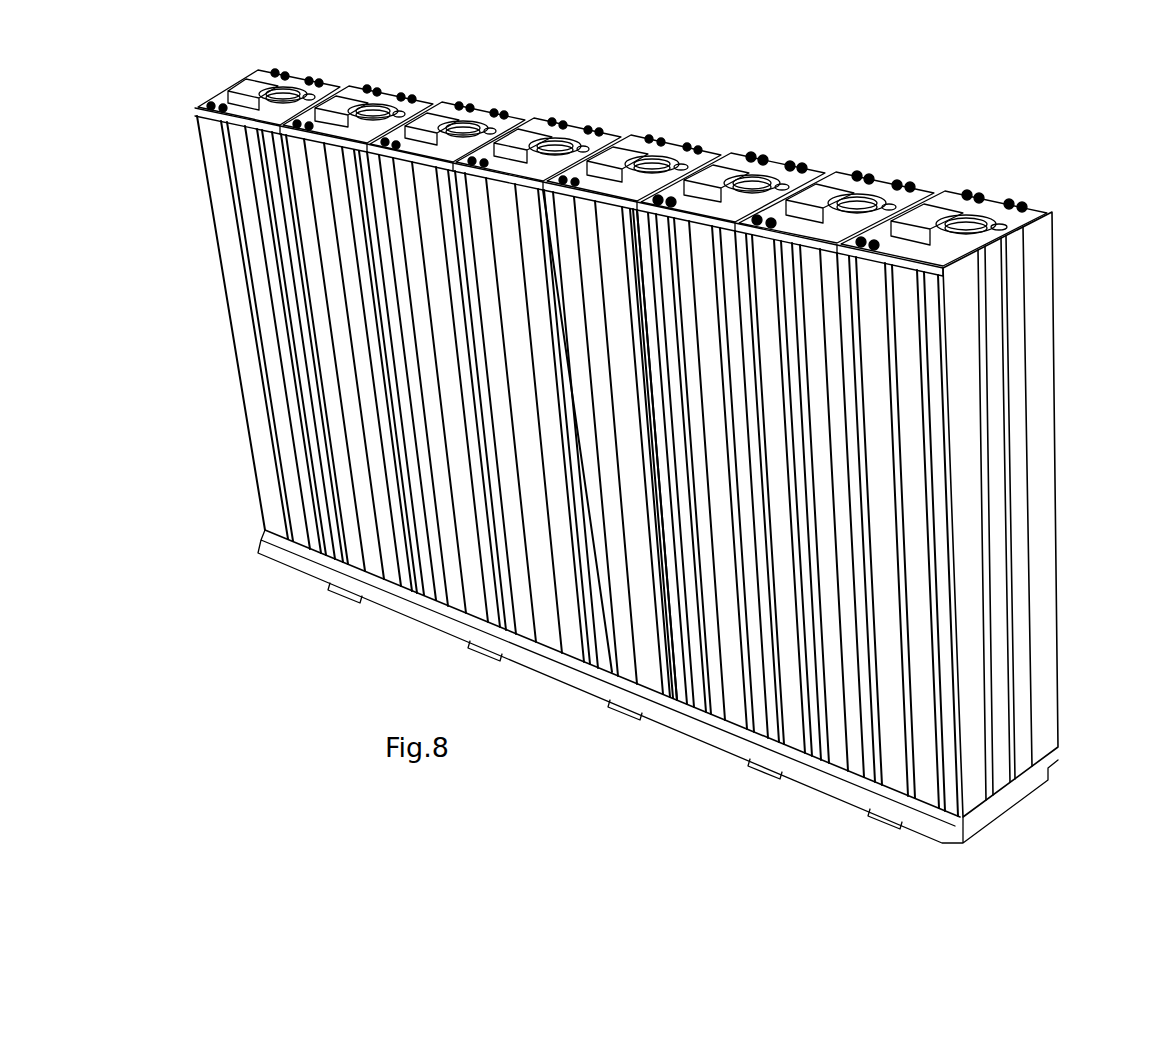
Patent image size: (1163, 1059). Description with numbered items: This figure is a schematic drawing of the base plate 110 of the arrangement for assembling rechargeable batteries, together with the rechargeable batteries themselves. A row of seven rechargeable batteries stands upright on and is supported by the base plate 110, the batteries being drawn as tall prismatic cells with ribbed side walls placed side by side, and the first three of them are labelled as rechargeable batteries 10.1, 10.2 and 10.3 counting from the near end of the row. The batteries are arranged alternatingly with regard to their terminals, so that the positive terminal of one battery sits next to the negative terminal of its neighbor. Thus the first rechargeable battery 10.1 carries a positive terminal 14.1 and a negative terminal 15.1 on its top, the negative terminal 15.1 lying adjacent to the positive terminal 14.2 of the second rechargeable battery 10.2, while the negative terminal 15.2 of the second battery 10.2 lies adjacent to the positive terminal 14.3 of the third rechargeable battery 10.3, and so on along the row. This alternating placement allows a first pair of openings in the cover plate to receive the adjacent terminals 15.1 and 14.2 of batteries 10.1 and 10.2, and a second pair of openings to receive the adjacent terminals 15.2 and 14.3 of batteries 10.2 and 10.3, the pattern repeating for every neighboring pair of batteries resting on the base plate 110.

The rechargeable battery 10.1 is at (989, 465).
The rechargeable battery 10.2 is at (731, 431).
The rechargeable battery 10.3 is at (638, 677).
The positive terminal 14.1 is at (982, 215).
The positive terminal 14.2 is at (842, 198).
The positive terminal 14.3 is at (728, 142).
The negative terminal 15.1 is at (922, 190).
The negative terminal 15.2 is at (782, 160).
The base plate 110 is at (973, 825).